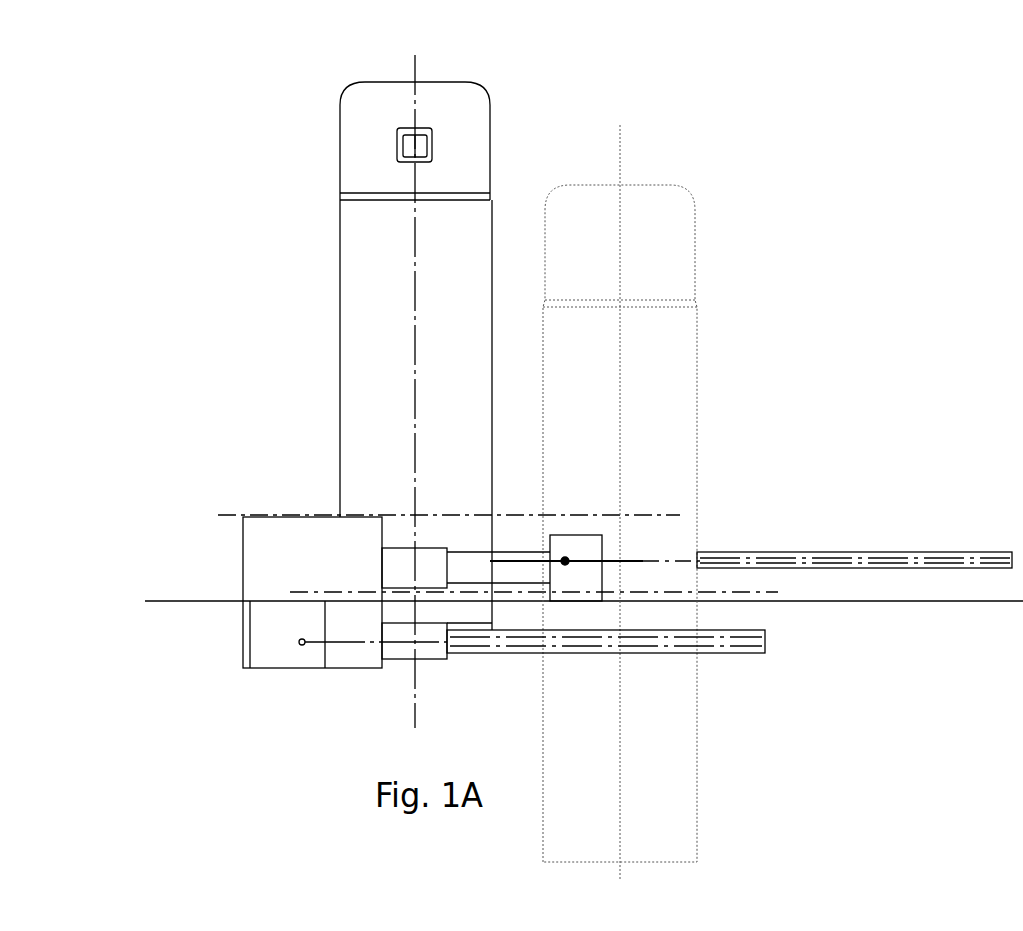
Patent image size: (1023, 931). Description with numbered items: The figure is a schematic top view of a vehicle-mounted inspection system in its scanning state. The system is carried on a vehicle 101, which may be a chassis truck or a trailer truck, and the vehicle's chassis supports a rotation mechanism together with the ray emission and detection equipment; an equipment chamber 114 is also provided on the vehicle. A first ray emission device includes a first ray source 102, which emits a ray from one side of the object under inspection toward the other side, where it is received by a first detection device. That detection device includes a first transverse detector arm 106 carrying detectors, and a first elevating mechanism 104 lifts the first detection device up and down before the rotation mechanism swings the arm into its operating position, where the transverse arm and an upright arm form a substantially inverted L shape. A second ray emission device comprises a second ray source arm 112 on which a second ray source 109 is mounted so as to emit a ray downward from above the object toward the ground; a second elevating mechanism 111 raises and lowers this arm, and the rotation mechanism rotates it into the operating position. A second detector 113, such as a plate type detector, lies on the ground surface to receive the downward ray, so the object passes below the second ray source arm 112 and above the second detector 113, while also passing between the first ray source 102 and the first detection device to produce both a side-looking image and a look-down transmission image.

The vehicle 101 is at (316, 125).
The equipment chamber 114 is at (317, 415).
The second elevating mechanism 111 is at (295, 461).
The first elevating mechanism 104 is at (295, 536).
The first ray source 102 is at (295, 583).
The second ray source arm 112 is at (661, 421).
The second ray source 109 is at (706, 484).
The second detector 113 is at (854, 500).
The first transverse detector arm 106 is at (654, 608).